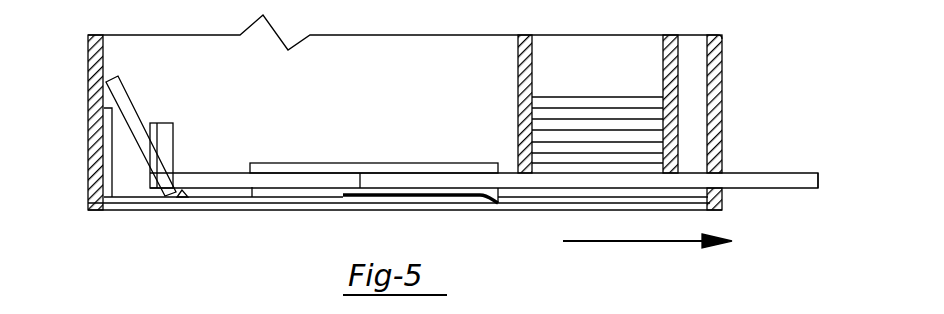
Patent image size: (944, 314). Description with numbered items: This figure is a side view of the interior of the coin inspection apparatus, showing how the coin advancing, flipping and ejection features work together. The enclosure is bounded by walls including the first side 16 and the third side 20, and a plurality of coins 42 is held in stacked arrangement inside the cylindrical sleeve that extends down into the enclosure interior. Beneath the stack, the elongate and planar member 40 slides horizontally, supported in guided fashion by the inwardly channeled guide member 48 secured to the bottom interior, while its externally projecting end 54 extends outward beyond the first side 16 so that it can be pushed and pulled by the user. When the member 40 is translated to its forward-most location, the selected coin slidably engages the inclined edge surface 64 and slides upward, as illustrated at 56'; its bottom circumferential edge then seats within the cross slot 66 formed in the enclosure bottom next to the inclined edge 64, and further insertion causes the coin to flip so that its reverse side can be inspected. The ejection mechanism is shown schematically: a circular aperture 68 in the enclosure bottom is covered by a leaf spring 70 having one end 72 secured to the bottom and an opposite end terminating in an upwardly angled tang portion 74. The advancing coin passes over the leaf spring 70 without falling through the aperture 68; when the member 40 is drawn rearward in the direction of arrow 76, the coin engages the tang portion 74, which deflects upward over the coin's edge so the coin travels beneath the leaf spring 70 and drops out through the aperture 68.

The first side 16 is at (722, 93).
The third side 20 is at (88, 110).
The elongate and planar member 40 is at (765, 173).
The coins 42 is at (585, 117).
The guide member 48 is at (343, 163).
The externally projecting end 54 is at (818, 183).
The coin 56' is at (156, 122).
The inclined edge surface 64 is at (125, 172).
The cross slot 66 is at (174, 195).
The circular aperture 68 is at (437, 204).
The leaf spring 70 is at (430, 193).
The end 72 is at (488, 201).
The upwardly angled tang portion 74 is at (344, 190).
The arrow 76 is at (657, 242).